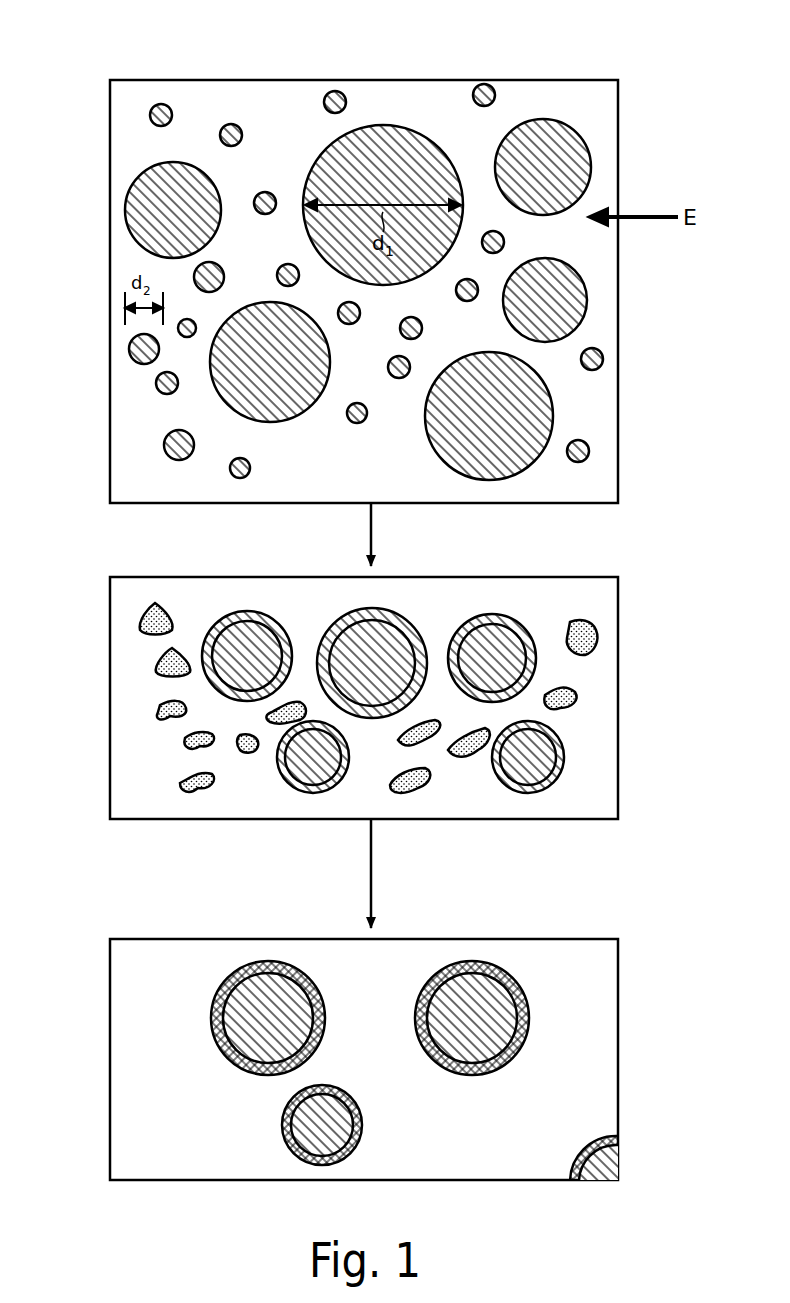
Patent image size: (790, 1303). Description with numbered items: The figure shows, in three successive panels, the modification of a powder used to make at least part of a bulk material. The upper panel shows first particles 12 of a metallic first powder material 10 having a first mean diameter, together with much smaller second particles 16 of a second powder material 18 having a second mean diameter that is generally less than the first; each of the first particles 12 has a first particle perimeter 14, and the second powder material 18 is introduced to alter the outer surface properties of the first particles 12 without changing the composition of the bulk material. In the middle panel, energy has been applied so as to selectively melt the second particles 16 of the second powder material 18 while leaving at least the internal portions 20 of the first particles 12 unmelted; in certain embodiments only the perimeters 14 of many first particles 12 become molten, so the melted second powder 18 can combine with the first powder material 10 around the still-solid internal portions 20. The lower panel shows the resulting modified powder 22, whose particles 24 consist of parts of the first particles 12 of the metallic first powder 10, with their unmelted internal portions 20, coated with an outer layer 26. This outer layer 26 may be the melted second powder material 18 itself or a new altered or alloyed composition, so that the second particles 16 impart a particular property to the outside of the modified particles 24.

The first powder material 10 is at (543, 114).
The first particles 12 is at (176, 183).
The first particle perimeters 14 is at (207, 173).
The second particles 16 is at (131, 340).
The second powder material 18 is at (153, 397).
The internal portions 20 is at (358, 676).
The modified powder 22 is at (238, 1078).
The modified particles 24 is at (297, 975).
The outer layer 26 is at (502, 970).